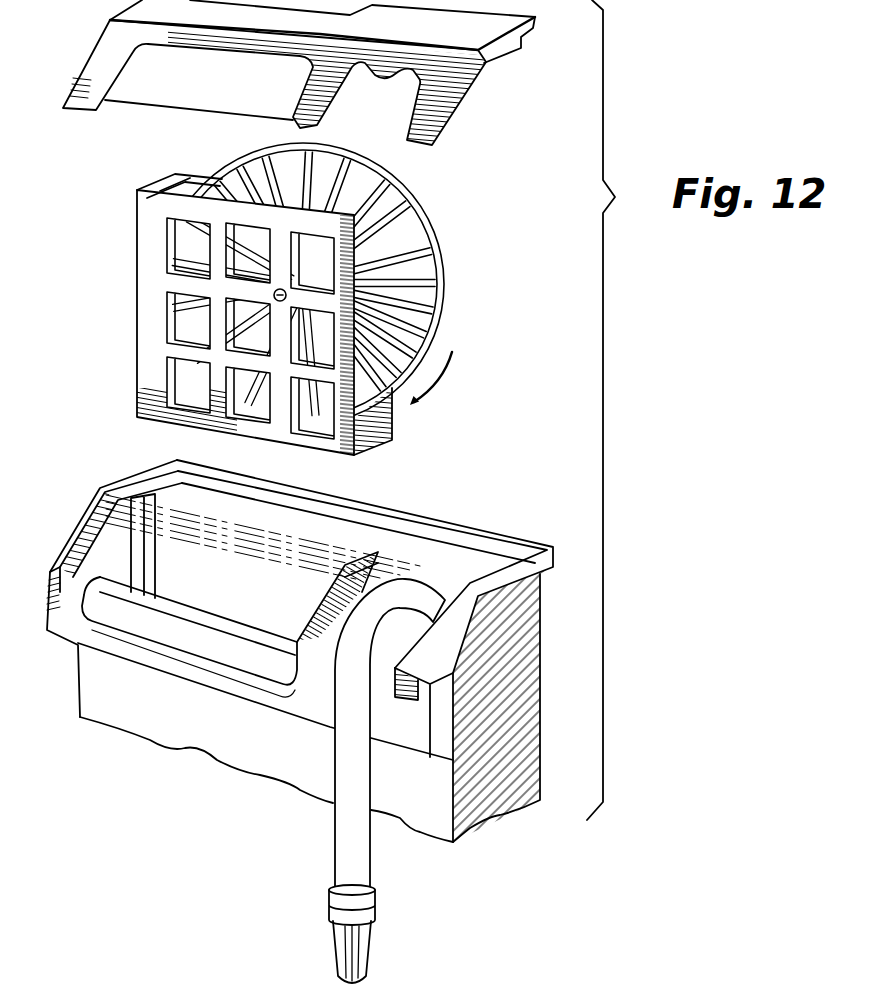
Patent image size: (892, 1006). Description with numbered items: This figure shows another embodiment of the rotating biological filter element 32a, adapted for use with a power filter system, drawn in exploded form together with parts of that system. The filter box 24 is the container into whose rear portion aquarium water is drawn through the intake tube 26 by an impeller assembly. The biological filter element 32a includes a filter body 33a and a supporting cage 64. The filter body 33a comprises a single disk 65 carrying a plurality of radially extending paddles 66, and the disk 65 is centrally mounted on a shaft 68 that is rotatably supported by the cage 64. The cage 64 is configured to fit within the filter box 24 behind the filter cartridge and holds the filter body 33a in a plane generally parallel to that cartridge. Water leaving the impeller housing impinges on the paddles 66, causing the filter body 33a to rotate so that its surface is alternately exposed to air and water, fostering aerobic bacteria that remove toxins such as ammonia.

The filter box 24 is at (511, 654).
The intake tube 26 is at (352, 828).
The biological filter element 32a is at (147, 180).
The filter body 33a is at (428, 206).
The supporting cage 64 is at (155, 373).
The disk 65 is at (430, 275).
The paddles 66 is at (444, 293).
The shaft 68 is at (274, 294).